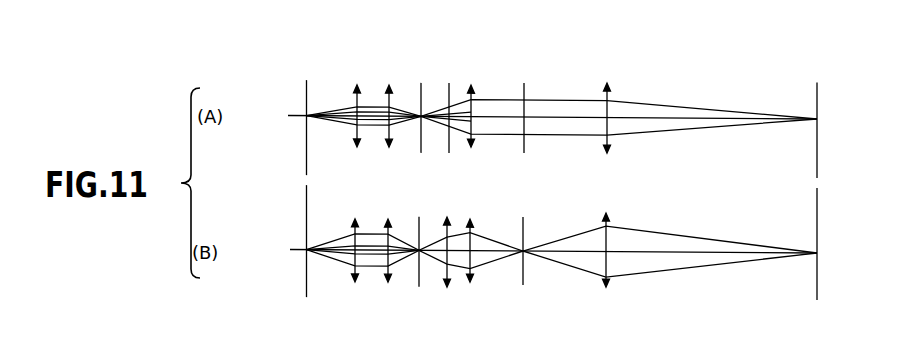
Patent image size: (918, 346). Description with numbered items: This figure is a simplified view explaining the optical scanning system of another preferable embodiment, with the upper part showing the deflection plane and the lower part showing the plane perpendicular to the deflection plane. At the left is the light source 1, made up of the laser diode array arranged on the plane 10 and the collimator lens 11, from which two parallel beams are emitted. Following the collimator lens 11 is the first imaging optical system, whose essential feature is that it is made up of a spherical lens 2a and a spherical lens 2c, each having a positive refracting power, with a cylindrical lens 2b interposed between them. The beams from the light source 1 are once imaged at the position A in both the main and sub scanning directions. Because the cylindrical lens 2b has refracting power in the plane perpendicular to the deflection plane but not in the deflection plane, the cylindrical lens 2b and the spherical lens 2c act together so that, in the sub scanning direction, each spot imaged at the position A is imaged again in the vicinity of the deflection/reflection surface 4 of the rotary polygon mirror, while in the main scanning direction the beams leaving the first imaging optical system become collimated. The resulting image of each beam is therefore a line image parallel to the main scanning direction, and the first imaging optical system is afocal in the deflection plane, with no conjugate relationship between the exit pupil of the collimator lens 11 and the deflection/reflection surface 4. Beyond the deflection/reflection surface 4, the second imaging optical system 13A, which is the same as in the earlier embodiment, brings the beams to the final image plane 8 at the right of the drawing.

The light source 1 is at (377, 46).
The plane on which the laser diode array is arranged 10 is at (312, 79).
The collimator lens 11 is at (358, 80).
The spherical lens 2a is at (390, 80).
The position A is at (422, 80).
The cylindrical lens 2b is at (450, 80).
The spherical lens 2c is at (472, 82).
The deflection/reflection surface 4 is at (526, 79).
The second imaging optical system 13A is at (609, 79).
The image plane / surface 8 is at (814, 77).